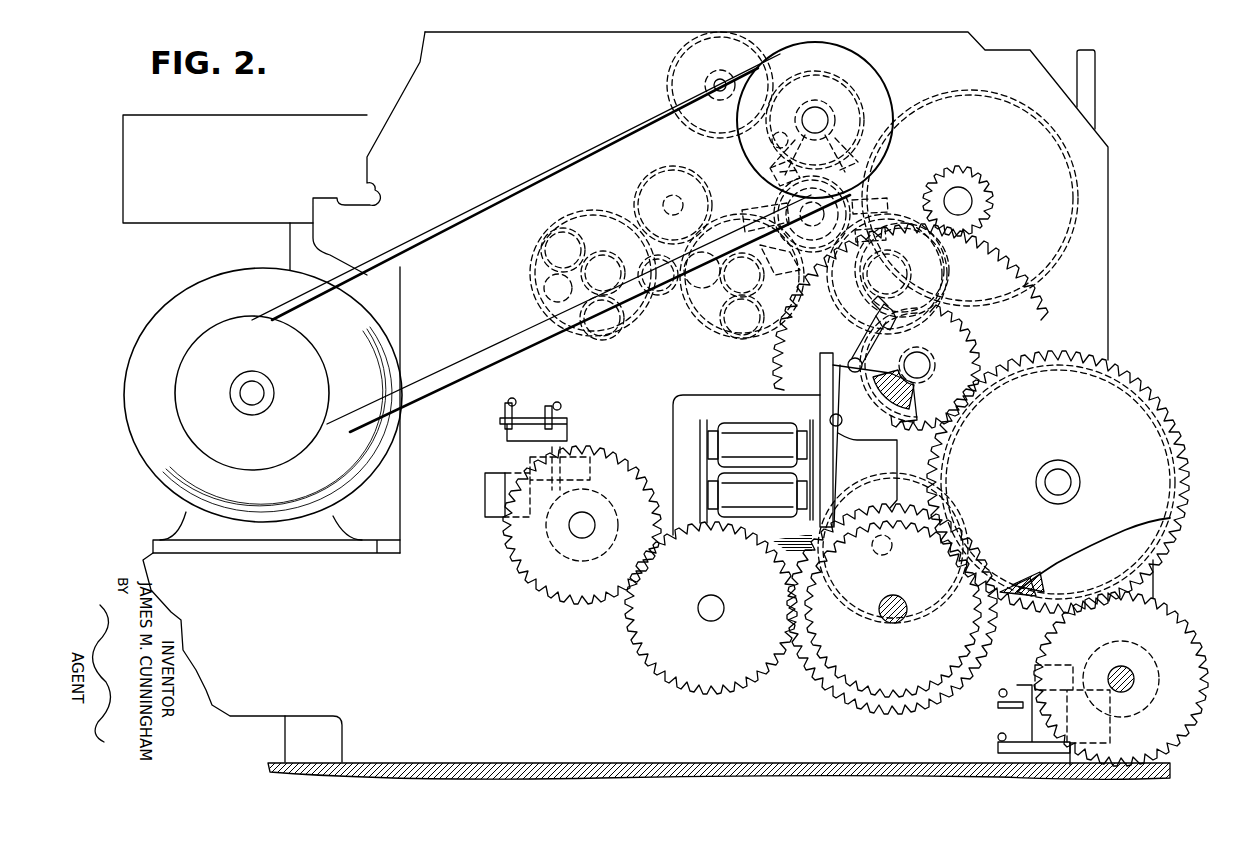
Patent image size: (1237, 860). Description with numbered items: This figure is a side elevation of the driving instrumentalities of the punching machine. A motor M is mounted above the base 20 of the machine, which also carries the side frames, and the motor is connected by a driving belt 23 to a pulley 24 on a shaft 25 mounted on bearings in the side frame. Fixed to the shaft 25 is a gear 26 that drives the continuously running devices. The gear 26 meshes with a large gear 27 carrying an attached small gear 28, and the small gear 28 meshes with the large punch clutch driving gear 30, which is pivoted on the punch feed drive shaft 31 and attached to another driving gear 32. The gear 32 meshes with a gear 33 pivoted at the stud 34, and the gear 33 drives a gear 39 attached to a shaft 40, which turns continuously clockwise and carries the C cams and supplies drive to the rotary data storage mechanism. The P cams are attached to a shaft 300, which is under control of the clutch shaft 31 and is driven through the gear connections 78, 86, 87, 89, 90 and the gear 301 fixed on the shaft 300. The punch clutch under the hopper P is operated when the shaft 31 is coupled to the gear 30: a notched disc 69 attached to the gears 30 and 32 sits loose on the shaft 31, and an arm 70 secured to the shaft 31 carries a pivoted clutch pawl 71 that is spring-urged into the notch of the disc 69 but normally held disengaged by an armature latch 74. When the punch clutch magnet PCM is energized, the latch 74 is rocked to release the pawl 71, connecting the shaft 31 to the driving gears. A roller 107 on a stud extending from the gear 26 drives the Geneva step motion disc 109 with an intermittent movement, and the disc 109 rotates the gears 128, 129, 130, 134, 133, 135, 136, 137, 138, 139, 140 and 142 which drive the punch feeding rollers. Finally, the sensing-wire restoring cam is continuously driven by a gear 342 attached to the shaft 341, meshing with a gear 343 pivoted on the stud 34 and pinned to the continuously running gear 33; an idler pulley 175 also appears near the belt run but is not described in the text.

The base 20 is at (492, 762).
The driving belt 23 is at (500, 346).
The pulley 24 is at (855, 77).
The shaft 25 is at (812, 116).
The gear 26 is at (860, 98).
The large gear 27 is at (996, 94).
The small gear 28 is at (985, 182).
The punch clutch driving gear 30 is at (1050, 312).
The punch feed drive shaft 31 is at (930, 364).
The driving gear 32 is at (905, 424).
The gear 33 is at (1165, 553).
The stud 34 is at (1036, 482).
The gear 39 is at (1170, 615).
The shaft 40 is at (1133, 672).
The notched disc 69 is at (893, 388).
The arm 70 is at (876, 370).
The clutch pawl 71 is at (852, 357).
The armature latch 74 is at (838, 452).
The gear 78 is at (975, 342).
The gear 86 is at (1132, 372).
The gear 87 is at (822, 690).
The gear 89 is at (851, 702).
The gear 90 is at (630, 620).
The roller 107 is at (772, 141).
The Geneva step motion disc 109 is at (878, 183).
The gear 128 is at (862, 198).
The gear 129 is at (950, 272).
The gear 130 is at (700, 320).
The gear 133 is at (582, 212).
The gear 134 is at (666, 174).
The gear 135 is at (876, 290).
The gear 136 is at (860, 318).
The gear 137 is at (722, 292).
The gear 138 is at (725, 331).
The gear 139 is at (598, 236).
The gear 140 is at (585, 329).
The gear 142 is at (646, 258).
The idler pulley 175 is at (710, 82).
The shaft 300 is at (568, 525).
The gear 301 is at (506, 558).
The shaft 341 is at (878, 552).
The gear 342 is at (850, 610).
The gear 343 is at (1162, 400).
The motor M is at (192, 280).
The hopper P is at (1060, 72).
The punch clutch magnet PCM is at (752, 486).